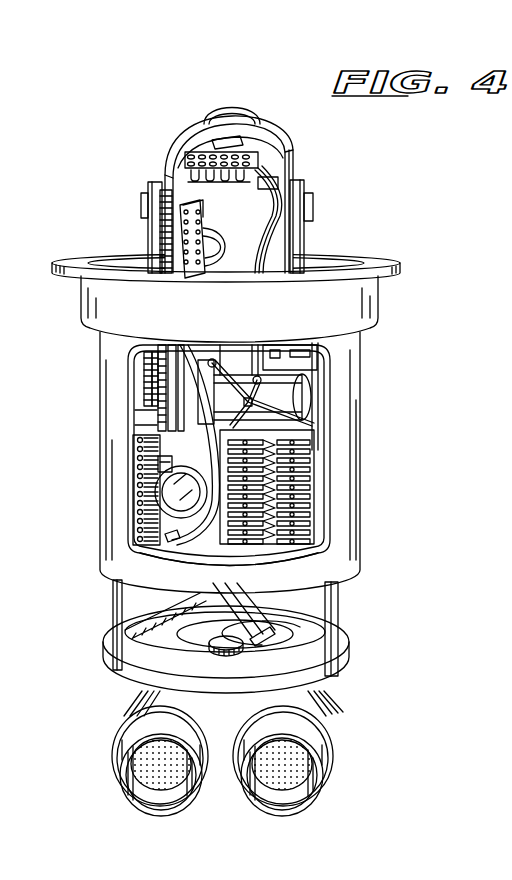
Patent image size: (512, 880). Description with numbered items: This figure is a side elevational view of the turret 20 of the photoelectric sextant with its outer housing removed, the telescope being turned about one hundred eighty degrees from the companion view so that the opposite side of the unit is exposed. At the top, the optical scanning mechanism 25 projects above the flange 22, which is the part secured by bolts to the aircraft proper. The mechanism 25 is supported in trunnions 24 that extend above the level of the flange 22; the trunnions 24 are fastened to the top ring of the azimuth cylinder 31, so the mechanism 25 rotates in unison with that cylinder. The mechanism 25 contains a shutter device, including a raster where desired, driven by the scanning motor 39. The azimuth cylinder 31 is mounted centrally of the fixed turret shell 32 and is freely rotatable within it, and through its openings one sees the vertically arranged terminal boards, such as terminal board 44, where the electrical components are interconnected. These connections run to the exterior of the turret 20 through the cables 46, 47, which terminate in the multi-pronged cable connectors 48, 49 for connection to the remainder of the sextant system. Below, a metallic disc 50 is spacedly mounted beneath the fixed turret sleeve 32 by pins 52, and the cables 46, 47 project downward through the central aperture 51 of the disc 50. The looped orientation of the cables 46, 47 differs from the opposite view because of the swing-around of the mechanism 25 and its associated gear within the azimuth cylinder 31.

The turret 20 is at (94, 385).
The flange 22 is at (368, 265).
The trunnions 24 is at (148, 240).
The optical scanning mechanism 25 is at (295, 150).
The azimuth cylinder 31 is at (290, 555).
The fixed turret shell 32 is at (118, 445).
The scanning motor 39 is at (240, 112).
The terminal board 44 is at (315, 468).
The cable 46 is at (272, 643).
The cable 47 is at (178, 658).
The multi-pronged cable connector 48 is at (112, 767).
The multi-pronged cable connector 49 is at (323, 784).
The metallic disc 50 is at (349, 655).
The central aperture 51 is at (224, 657).
The pins 52 is at (118, 610).